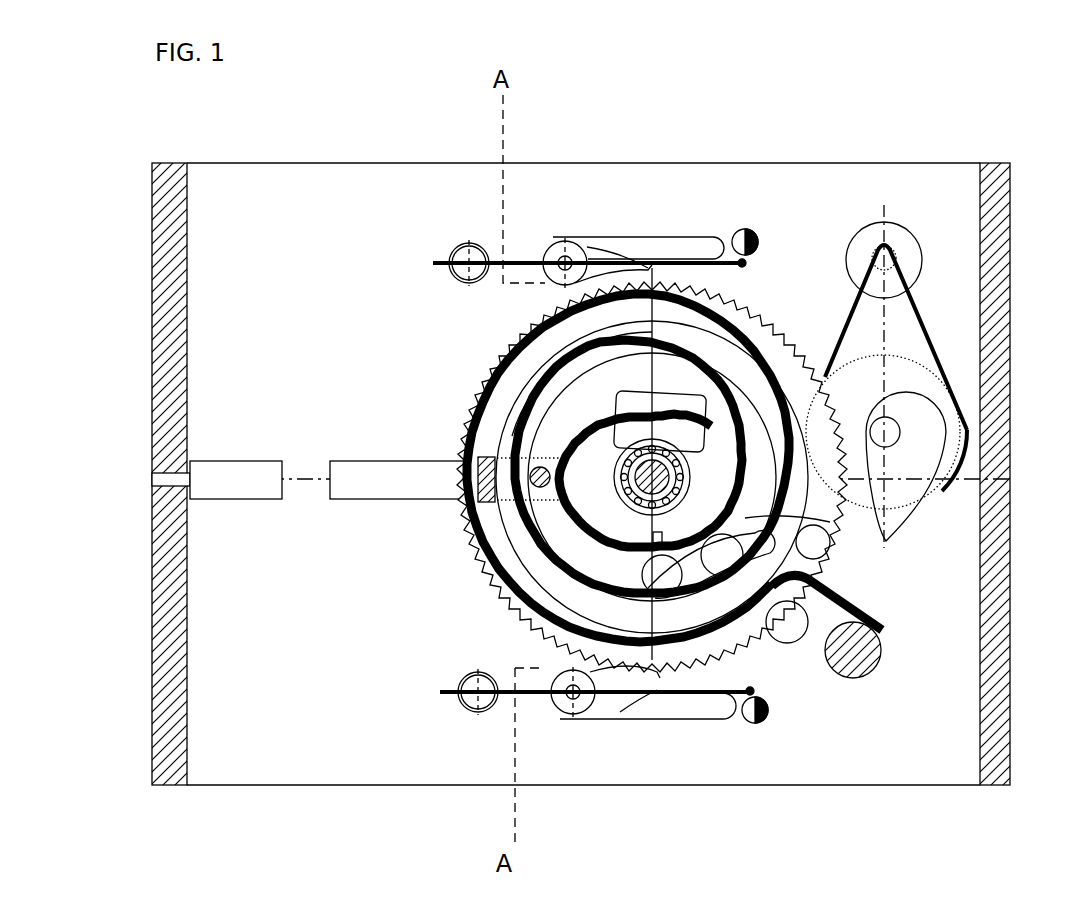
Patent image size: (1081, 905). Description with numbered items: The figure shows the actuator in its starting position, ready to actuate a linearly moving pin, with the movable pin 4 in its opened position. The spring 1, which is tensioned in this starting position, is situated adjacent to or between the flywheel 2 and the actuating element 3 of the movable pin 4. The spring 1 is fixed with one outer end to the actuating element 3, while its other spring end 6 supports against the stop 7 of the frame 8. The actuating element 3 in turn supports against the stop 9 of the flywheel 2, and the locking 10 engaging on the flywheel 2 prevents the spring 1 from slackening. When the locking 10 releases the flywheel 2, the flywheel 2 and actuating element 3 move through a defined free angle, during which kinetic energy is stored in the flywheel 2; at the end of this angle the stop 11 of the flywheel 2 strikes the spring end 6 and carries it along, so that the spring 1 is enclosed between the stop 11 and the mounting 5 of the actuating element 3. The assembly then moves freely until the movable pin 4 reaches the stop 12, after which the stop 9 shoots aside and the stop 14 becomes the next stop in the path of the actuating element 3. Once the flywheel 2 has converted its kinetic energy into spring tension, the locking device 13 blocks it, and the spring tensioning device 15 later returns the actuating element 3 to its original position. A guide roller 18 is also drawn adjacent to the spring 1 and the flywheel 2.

The spring 1 is at (753, 338).
The flywheel 2 is at (808, 390).
The actuating element 3 is at (723, 368).
The movable pin 4 is at (385, 476).
The mounting 5 is at (678, 413).
The spring end 6 is at (868, 613).
The stop 7 is at (853, 650).
The frame 8 is at (990, 705).
The stop 9 is at (666, 574).
The locking 10 is at (604, 258).
The stop 11 is at (787, 622).
The stop 12 is at (232, 473).
The locking device 13 is at (608, 698).
The stop 14 is at (718, 553).
The spring tensioning device 15 is at (913, 510).
The guide roller 18 is at (813, 542).